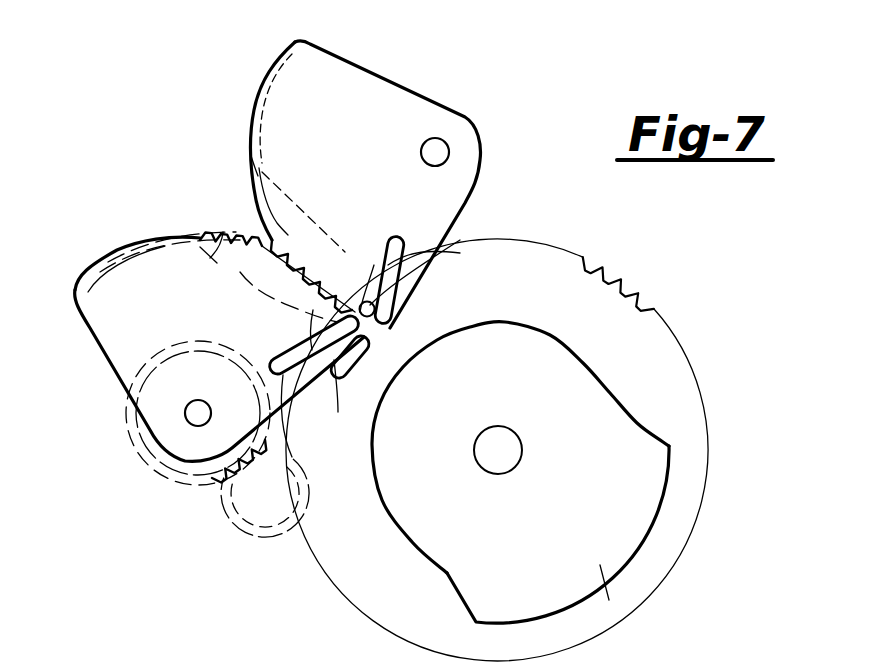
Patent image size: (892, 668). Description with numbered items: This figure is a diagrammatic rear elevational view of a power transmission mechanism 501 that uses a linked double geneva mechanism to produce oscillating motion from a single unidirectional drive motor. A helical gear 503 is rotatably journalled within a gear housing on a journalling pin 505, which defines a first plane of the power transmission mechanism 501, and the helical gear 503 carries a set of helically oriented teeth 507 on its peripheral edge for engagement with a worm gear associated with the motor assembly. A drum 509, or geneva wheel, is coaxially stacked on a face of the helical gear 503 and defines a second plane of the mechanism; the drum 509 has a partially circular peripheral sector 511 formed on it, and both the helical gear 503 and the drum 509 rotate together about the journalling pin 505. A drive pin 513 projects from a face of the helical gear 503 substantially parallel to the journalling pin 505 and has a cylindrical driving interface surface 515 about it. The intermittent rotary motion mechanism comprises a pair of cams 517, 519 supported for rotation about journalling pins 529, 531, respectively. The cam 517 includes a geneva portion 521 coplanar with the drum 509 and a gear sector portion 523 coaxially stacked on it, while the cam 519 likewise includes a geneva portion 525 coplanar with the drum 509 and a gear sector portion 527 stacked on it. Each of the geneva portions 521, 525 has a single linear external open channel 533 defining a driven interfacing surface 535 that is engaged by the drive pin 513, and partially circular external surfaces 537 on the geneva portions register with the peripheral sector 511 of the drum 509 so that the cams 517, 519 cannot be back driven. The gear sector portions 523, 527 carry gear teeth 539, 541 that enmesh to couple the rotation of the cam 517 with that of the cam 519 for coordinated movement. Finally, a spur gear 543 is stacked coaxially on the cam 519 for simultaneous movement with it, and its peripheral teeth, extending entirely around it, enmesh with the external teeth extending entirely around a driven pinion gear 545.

The power transmission mechanism 501 is at (650, 229).
The helical gear 503 is at (703, 410).
The journalling pin 505 is at (512, 447).
The helically oriented teeth 507 is at (635, 290).
The drum 509 is at (570, 494).
The partially circular peripheral sector 511 is at (660, 541).
The drive pin 513 is at (376, 309).
The cylindrical driving interface surface 515 is at (299, 383).
The cam 517 is at (387, 95).
The cam 519 is at (97, 308).
The geneva portion 521 is at (395, 330).
The gear sector portion 523 is at (329, 270).
The geneva portion 525 is at (366, 371).
The gear sector portion 527 is at (272, 266).
The journalling pin 529 is at (440, 148).
The journalling pin 531 is at (185, 406).
The linear external open channel 533 is at (400, 243).
The driven interfacing surface 535 is at (440, 254).
The partially circular external surface 537 is at (223, 232).
The gear teeth 539 is at (250, 152).
The gear teeth 541 is at (200, 247).
The spur gear 543 is at (135, 440).
The driven pinion gear 545 is at (233, 507).